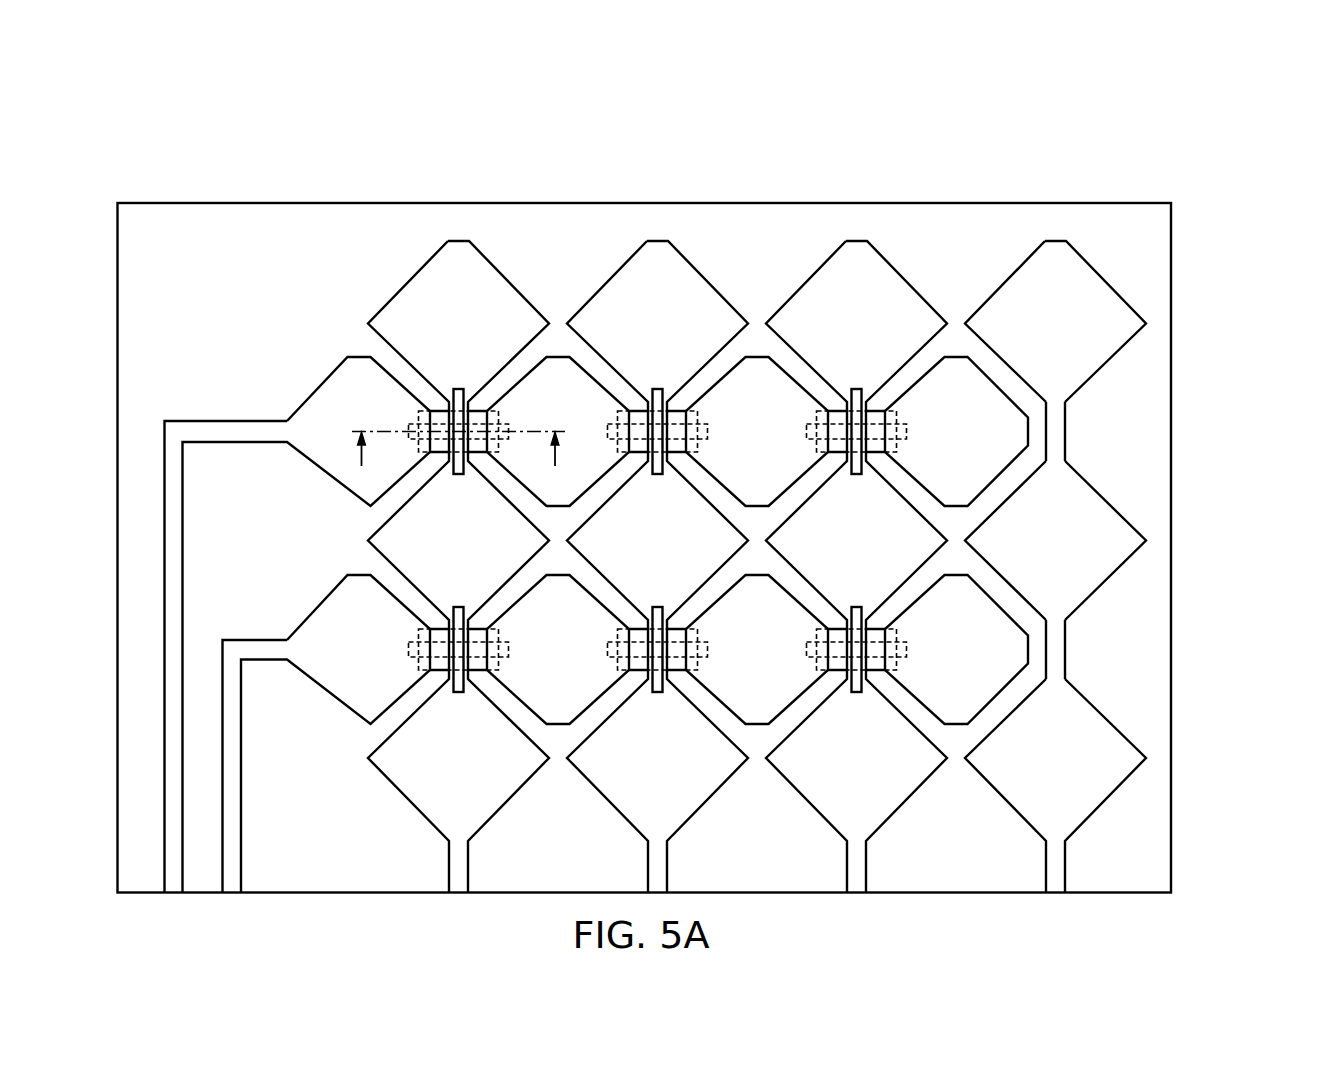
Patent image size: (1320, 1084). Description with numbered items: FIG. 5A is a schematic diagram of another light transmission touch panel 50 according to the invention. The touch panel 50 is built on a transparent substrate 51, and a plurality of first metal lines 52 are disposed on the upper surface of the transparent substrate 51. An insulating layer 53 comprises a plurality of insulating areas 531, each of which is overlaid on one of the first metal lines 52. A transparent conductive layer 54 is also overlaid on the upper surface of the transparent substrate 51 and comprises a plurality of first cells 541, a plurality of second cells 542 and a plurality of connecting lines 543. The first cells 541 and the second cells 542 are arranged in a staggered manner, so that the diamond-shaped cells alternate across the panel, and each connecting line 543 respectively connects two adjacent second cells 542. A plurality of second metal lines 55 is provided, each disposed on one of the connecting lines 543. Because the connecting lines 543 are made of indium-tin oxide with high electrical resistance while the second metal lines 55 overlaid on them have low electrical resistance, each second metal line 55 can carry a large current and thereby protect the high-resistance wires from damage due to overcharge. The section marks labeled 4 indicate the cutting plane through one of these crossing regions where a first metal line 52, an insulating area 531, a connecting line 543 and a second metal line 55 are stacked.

The touch panel 50 is at (1175, 175).
The transparent substrate 51 is at (1058, 203).
The first metal lines 52 is at (412, 423).
The insulating layer 53 is at (508, 130).
The insulating areas 531 is at (474, 412).
The transparent conductive layer 54 is at (1089, 553).
The first cells 541 is at (956, 372).
The second cells 542 is at (1108, 282).
The connecting lines 543 is at (1066, 432).
The second metal lines 55 is at (459, 388).
The section line 4 is at (458, 466).